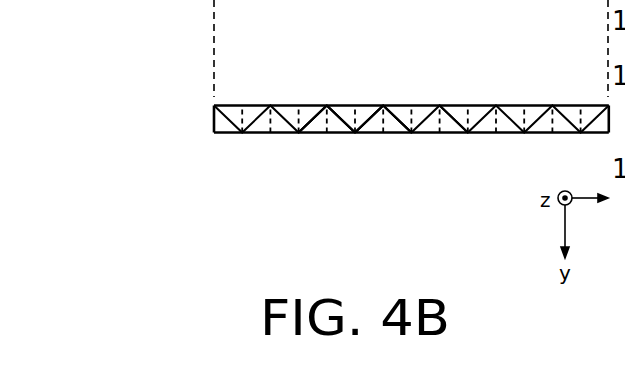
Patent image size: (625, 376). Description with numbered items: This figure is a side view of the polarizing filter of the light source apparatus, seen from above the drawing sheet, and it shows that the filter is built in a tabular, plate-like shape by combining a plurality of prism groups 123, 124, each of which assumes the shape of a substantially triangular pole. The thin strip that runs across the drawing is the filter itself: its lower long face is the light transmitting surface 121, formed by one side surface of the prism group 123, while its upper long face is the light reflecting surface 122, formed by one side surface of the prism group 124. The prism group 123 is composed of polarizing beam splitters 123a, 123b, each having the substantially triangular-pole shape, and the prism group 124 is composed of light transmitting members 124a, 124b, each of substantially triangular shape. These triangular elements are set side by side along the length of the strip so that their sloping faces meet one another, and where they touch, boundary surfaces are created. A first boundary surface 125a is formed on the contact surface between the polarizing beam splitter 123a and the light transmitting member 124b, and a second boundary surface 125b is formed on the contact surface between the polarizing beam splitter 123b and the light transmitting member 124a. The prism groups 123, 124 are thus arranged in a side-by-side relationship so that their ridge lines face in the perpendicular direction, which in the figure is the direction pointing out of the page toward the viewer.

The light transmitting surface 121 is at (490, 133).
The light reflecting surface 122 is at (490, 105).
The prism group 123 is at (480, 188).
The polarizing beam splitter 123a is at (317, 133).
The polarizing beam splitter 123b is at (343, 133).
The prism group 124 is at (448, 43).
The light transmitting member 124a is at (341, 105).
The light transmitting member 124b is at (372, 105).
The first boundary surface 125a is at (305, 104).
The second boundary surface 125b is at (455, 133).